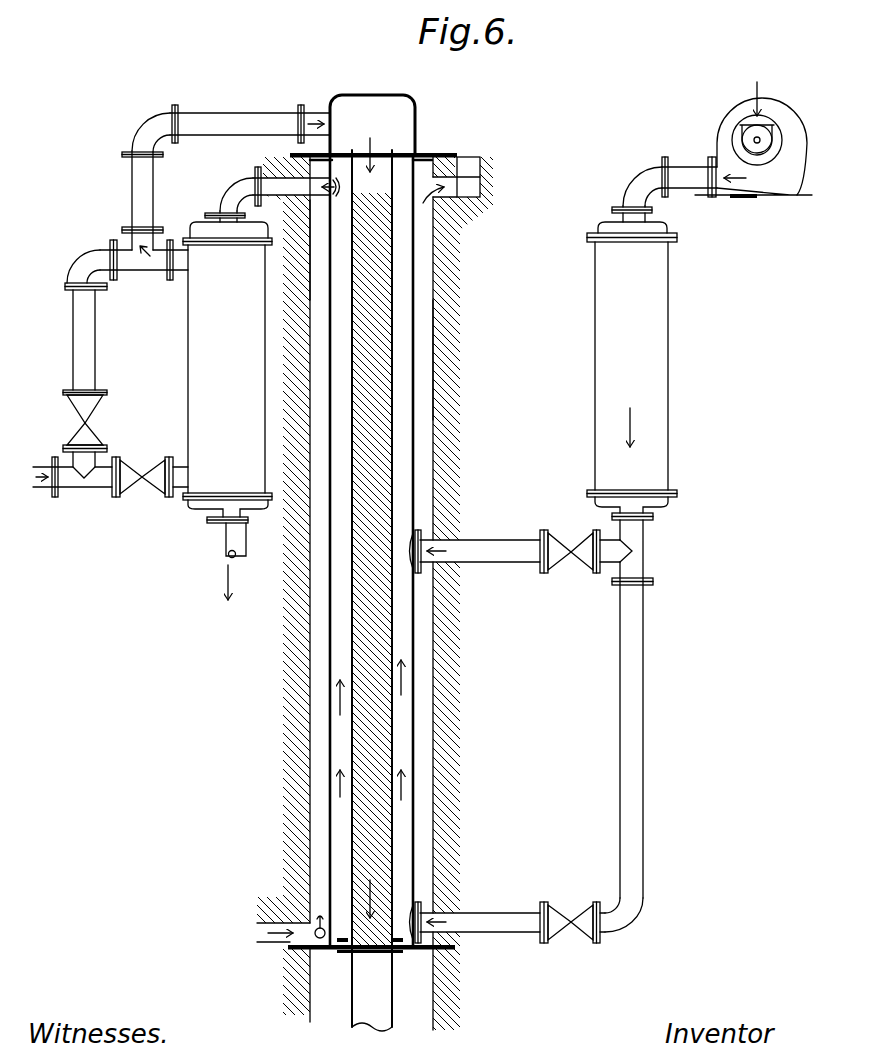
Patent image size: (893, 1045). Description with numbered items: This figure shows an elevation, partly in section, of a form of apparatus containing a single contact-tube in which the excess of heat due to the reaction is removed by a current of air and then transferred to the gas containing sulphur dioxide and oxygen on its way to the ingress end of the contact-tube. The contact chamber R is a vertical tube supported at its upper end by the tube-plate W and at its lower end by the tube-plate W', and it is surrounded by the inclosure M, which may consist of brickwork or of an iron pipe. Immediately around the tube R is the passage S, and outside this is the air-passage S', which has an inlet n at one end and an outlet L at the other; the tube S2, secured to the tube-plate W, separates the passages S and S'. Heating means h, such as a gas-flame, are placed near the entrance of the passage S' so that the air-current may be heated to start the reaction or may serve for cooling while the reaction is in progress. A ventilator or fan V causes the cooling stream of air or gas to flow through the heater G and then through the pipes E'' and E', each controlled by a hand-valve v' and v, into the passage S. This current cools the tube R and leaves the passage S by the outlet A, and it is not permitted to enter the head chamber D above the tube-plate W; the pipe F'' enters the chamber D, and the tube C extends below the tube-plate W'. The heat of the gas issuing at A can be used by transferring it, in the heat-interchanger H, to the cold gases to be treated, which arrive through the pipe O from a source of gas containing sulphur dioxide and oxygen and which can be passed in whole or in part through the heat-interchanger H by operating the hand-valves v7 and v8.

The head chamber D is at (372, 133).
The vapor pipe F'' is at (197, 247).
The tube-plate W is at (373, 140).
The outlet L is at (451, 166).
The ventilator or fan V is at (717, 141).
The outlet A is at (280, 190).
The heat-interchanger H is at (227, 406).
The tube S2 is at (413, 312).
The air-passage S' is at (401, 310).
The contact chamber R is at (372, 548).
The passage S is at (370, 613).
The heater G is at (632, 552).
The hand-valve v8 is at (95, 434).
The hand-valve v7 is at (150, 483).
The pipe O is at (52, 482).
The pipe E'' is at (475, 545).
The hand-valve v' is at (580, 543).
The inclosure M is at (370, 593).
The heating means h is at (318, 912).
The inlet n is at (273, 933).
The pipe E' is at (475, 918).
The hand-valve v is at (591, 912).
The tube-plate W' is at (371, 964).
The discharge tube C is at (372, 990).